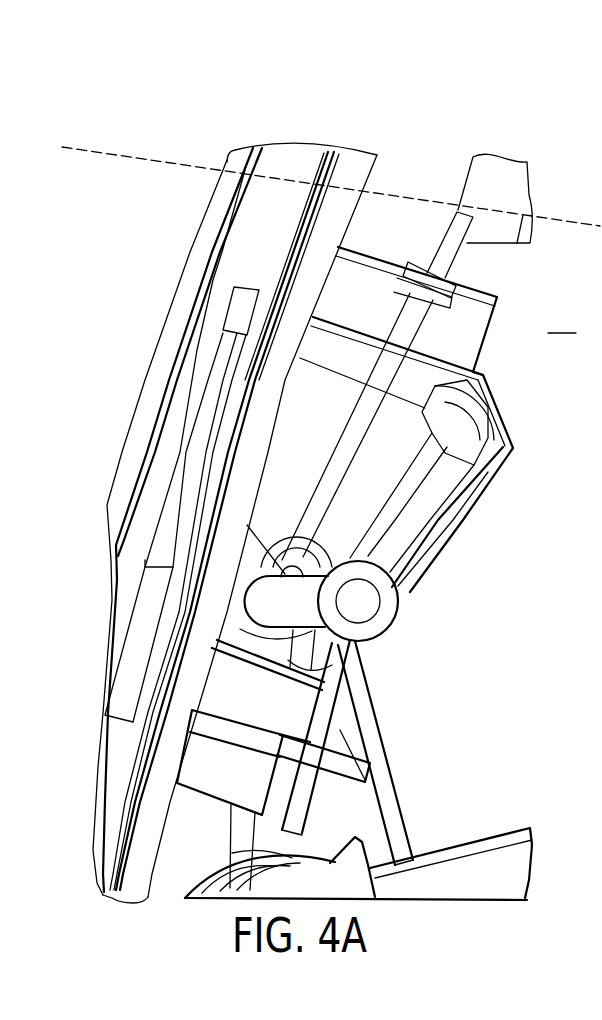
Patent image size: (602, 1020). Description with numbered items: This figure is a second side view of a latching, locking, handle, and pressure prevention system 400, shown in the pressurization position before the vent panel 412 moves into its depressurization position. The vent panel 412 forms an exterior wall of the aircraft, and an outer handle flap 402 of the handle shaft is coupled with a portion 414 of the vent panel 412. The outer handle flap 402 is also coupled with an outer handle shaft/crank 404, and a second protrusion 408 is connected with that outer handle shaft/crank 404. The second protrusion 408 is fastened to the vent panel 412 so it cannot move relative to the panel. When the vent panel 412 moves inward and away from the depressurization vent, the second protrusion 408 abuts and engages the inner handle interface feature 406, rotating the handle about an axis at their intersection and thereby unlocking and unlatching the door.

The latching, locking, handle, and pressure prevention system 400 is at (199, 116).
The outer handle flap 402 is at (207, 363).
The outer handle shaft/crank 404 is at (267, 612).
The inner handle interface feature 406 is at (353, 850).
The second protrusion 408 is at (345, 680).
The vent panel 412 is at (438, 493).
The portion of the vent panel 414 is at (233, 318).